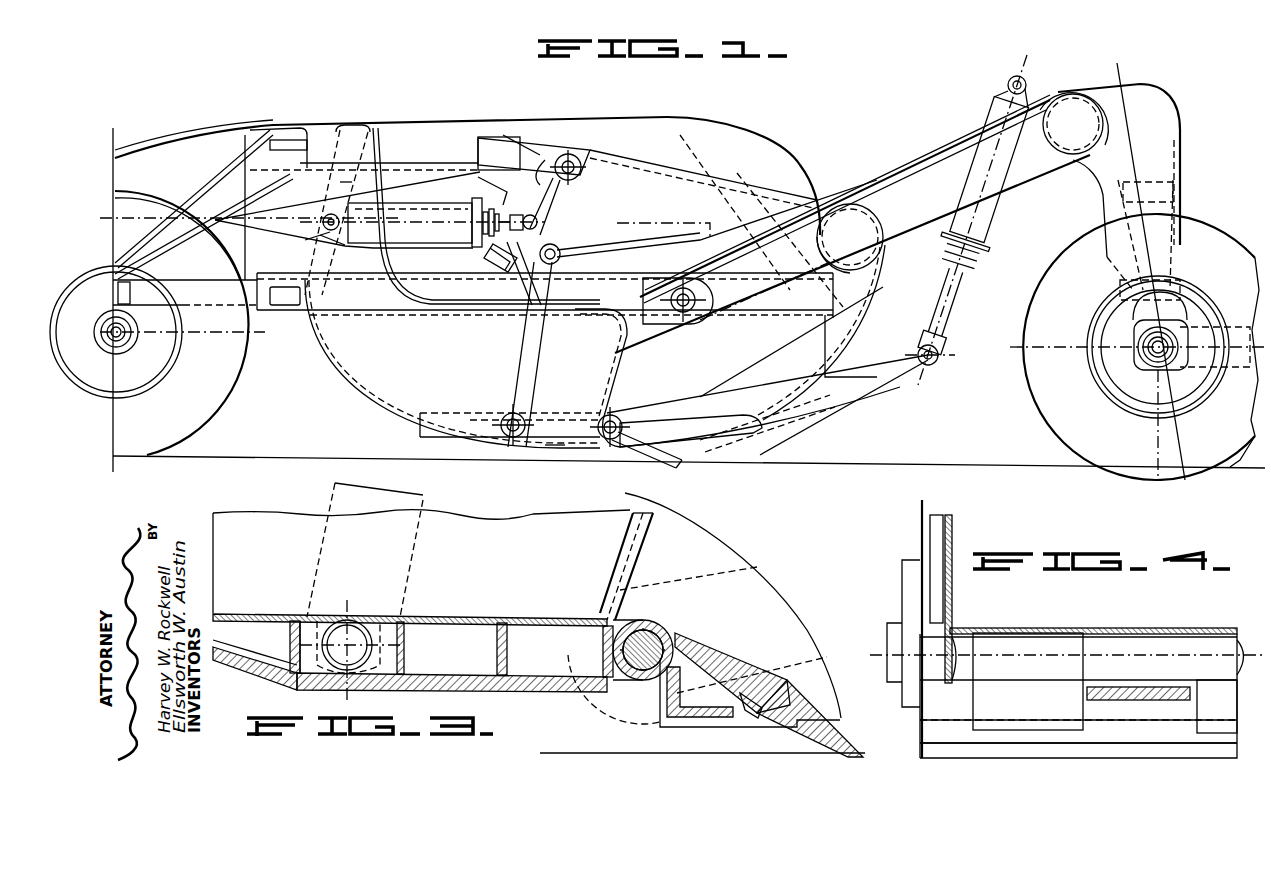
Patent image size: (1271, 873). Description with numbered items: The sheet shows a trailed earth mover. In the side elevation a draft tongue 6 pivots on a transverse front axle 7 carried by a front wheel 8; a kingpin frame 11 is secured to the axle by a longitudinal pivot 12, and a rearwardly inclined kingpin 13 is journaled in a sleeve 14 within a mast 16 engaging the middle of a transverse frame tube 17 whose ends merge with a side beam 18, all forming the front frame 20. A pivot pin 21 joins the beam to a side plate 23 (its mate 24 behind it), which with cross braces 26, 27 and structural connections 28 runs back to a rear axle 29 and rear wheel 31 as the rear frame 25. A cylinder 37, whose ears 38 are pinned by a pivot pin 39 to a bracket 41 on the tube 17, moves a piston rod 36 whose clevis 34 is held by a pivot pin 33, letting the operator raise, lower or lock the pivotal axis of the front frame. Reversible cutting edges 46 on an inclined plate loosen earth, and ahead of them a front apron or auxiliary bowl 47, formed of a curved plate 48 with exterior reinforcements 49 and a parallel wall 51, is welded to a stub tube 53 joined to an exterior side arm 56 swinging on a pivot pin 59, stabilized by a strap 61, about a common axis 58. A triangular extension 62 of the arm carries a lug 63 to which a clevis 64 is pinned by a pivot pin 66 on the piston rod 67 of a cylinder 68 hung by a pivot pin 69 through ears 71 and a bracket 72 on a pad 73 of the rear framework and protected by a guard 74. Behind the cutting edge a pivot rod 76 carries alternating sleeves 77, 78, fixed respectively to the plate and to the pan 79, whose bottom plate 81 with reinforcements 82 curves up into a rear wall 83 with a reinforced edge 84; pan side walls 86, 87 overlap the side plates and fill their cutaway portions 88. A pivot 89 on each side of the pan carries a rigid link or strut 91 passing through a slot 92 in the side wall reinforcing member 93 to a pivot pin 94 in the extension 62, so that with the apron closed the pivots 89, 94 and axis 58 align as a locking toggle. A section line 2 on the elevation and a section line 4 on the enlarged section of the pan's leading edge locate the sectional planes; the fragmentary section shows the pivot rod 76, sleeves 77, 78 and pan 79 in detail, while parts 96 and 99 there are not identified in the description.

In FIG. 1, the section line 2- 2 is at (108, 232).
In FIG. 3, the section line 4 is at (618, 497).
In FIG. 1, the draft tongue 6 is at (1240, 368).
In FIG. 1, the transverse front axle 7 is at (1168, 365).
In FIG. 1, the front ground engaging wheel 8 is at (1052, 428).
In FIG. 1, the kingpin frame 11 is at (1188, 292).
In FIG. 1, the longitudinally extending pivot 12 is at (1140, 360).
In FIG. 1, the kingpin 13 is at (1160, 262).
In FIG. 1, the coaxial sleeve 14 is at (1172, 200).
In FIG. 1, the mast 16 is at (1172, 150).
In FIG. 1, the transverse frame tube 17 is at (1073, 157).
In FIG. 1, the side beam 18 is at (895, 172).
In FIG. 1, the front frame 20 is at (957, 140).
In FIG. 1, the pivot pin 21 is at (675, 310).
In FIG. 1, the side plate 23 is at (470, 122).
In FIG. 3, the side plate 24 is at (735, 556).
In FIG. 4, the side plate 24 is at (948, 632).
In FIG. 1, the rear frame 25 is at (745, 124).
In FIG. 1, the cross brace 26 is at (285, 140).
In FIG. 1, the cross brace 27 is at (286, 308).
In FIG. 1, the structural connections 28 is at (186, 240).
In FIG. 1, the rear axle 29 is at (125, 345).
In FIG. 1, the rear ground engaging wheel 31 is at (218, 406).
In FIG. 1, the pivot pin 33 is at (938, 358).
In FIG. 1, the clevis 34 is at (945, 338).
In FIG. 1, the piston rod 36 is at (955, 300).
In FIG. 1, the cylinder 37 is at (990, 228).
In FIG. 1, the ears 38 is at (1007, 88).
In FIG. 1, the pivot pin 39 is at (1011, 80).
In FIG. 1, the bracket 41 is at (1068, 90).
In FIG. 1, the reversible cutting edges 46 is at (675, 462).
In FIG. 3, the reversible cutting edges 46 is at (798, 706).
In FIG. 1, the front apron or auxiliary bowl 47 is at (805, 408).
In FIG. 1, the curved interior plate 48 is at (770, 420).
In FIG. 1, the exterior reinforcements 49 is at (738, 436).
In FIG. 1, the parallel wall 51 is at (873, 287).
In FIG. 1, the stub tube 53 is at (876, 214).
In FIG. 1, the side arm 56 is at (768, 198).
In FIG. 1, the common axis 58 is at (568, 154).
In FIG. 1, the pivot pin 59 is at (575, 160).
In FIG. 1, the strap 61 is at (510, 140).
In FIG. 1, the triangular extension 62 is at (640, 252).
In FIG. 1, the lug 63 is at (520, 278).
In FIG. 1, the clevis 64 is at (505, 218).
In FIG. 1, the pivot pin 66 is at (538, 222).
In FIG. 1, the piston rod 67 is at (485, 255).
In FIG. 1, the cylinder 68 is at (440, 203).
In FIG. 1, the pivot pin 69 is at (331, 231).
In FIG. 1, the ears 71 is at (340, 240).
In FIG. 1, the bracket 72 is at (317, 248).
In FIG. 1, the pad 73 is at (243, 145).
In FIG. 1, the guard 74 is at (425, 250).
In FIG. 1, the pivot rod 76 is at (622, 420).
In FIG. 3, the pivot rod 76 is at (673, 634).
In FIG. 4, the pivot rod 76 is at (1243, 635).
In FIG. 3, the sleeve 77 is at (650, 632).
In FIG. 4, the sleeve 77 is at (1102, 640).
In FIG. 4, the sleeve 78 is at (1030, 635).
In FIG. 1, the pan 79 is at (448, 418).
In FIG. 3, the pan 79 is at (480, 616).
In FIG. 4, the pan 79 is at (1145, 628).
In FIG. 1, the bottom plate 81 is at (490, 418).
In FIG. 3, the bottom plate 81 is at (440, 618).
In FIG. 4, the bottom plate 81 is at (1068, 632).
In FIG. 1, the reinforcements 82 is at (565, 447).
In FIG. 3, the reinforcements 82 is at (490, 652).
In FIG. 1, the rear wall 83 is at (352, 182).
In FIG. 1, the upper reinforced edge 84 is at (356, 130).
In FIG. 1, the side wall 86 is at (368, 396).
In FIG. 3, the side wall 87 is at (514, 520).
In FIG. 4, the side wall 87 is at (920, 534).
In FIG. 1, the cutaway portions 88 is at (498, 318).
In FIG. 1, the pivot 89 is at (528, 420).
In FIG. 3, the pivot 89 is at (358, 630).
In FIG. 1, the link or strut 91 is at (535, 358).
In FIG. 3, the link or strut 91 is at (413, 552).
In FIG. 1, the slot 92 is at (642, 292).
In FIG. 1, the side wall reinforcing member 93 is at (755, 310).
In FIG. 3, the side wall reinforcing member 93 is at (710, 660).
In FIG. 1, the pivot pin 94 is at (562, 252).
In FIG. 4, the blade edge 96 is at (935, 748).
In FIG. 3, the bracket 99 is at (722, 718).
In FIG. 4, the bracket 99 is at (940, 722).